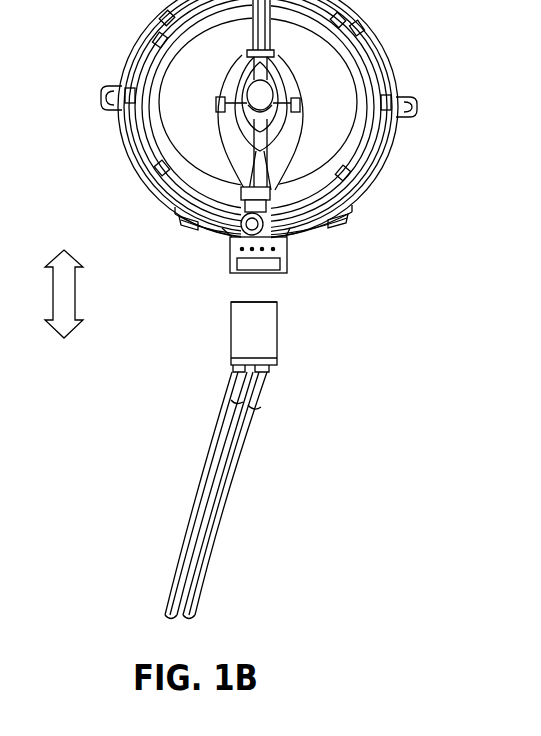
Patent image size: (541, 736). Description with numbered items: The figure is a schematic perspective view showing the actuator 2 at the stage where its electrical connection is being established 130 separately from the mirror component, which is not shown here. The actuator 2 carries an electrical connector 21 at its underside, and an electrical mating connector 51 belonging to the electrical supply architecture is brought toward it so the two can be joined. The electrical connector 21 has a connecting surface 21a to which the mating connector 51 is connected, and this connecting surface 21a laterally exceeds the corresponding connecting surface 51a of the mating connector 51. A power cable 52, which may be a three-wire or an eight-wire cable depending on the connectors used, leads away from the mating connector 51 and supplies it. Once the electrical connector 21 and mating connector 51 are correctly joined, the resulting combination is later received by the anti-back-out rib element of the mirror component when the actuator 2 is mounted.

The actuator 2 is at (408, 186).
The electrical connector 21 is at (296, 251).
The connecting surface 21a is at (273, 266).
The electrical mating connector 51 is at (224, 338).
The connecting surface 51a is at (236, 291).
The power cable 52 is at (248, 468).
The establishing the electrical connection 130 is at (60, 275).